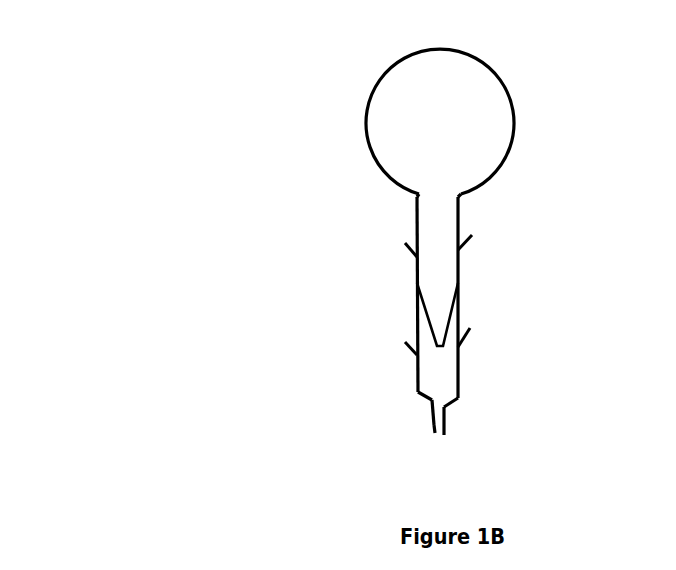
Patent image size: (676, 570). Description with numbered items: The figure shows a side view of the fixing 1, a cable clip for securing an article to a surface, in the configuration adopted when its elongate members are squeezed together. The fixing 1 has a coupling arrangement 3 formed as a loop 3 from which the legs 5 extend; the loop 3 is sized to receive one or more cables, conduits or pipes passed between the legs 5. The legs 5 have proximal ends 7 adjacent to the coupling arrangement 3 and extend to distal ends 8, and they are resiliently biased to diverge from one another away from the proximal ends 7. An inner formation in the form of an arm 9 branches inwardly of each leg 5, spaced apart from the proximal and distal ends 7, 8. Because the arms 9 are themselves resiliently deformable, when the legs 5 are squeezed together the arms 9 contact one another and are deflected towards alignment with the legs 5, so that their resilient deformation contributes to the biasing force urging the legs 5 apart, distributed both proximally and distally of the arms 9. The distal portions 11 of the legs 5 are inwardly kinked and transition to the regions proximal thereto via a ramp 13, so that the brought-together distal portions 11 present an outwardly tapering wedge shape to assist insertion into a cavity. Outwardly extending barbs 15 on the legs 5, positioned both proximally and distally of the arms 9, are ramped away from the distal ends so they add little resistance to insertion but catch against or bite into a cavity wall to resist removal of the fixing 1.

The fixing 1 is at (214, 116).
The coupling arrangement 3 is at (508, 82).
The legs 5 is at (412, 235).
The proximal ends 7 is at (423, 192).
The distal ends 8 is at (432, 433).
The arms 9 is at (430, 316).
The distal portions 11 is at (477, 388).
The ramp 13 is at (425, 397).
The barbs 15 is at (468, 245).